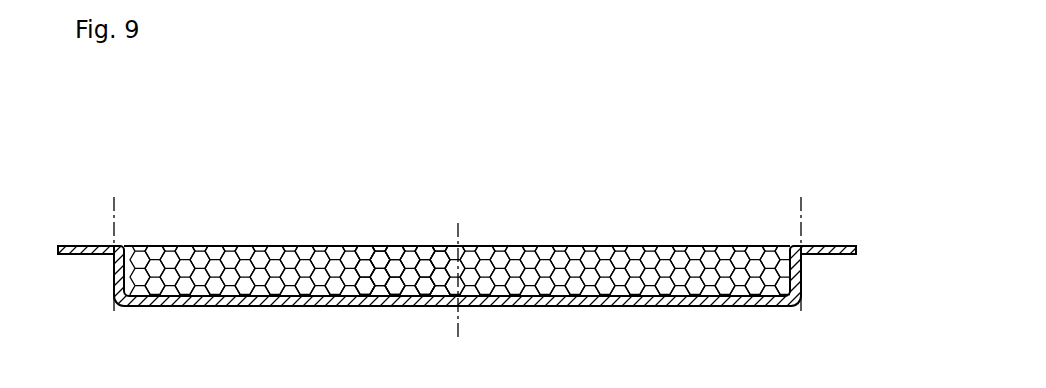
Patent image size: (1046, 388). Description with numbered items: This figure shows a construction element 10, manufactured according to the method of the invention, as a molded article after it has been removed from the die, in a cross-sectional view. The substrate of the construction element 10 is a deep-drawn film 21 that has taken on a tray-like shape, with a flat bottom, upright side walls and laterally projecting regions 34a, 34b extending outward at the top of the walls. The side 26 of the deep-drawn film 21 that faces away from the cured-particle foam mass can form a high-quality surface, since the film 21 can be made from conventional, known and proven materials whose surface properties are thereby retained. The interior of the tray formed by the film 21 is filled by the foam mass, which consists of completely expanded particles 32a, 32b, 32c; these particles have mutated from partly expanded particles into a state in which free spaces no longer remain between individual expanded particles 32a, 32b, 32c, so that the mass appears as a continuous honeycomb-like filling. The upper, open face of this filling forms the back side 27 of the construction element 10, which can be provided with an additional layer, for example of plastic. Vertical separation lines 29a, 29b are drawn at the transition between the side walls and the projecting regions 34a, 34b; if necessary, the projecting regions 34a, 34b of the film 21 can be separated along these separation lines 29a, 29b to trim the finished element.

The construction element 10 is at (599, 175).
The film 21 is at (277, 300).
The side of the deep-drawn film 26 is at (517, 308).
The back side 27 is at (372, 245).
The separation line 29a is at (110, 222).
The separation line 29b is at (805, 217).
The completely expanded particle 32a is at (373, 278).
The completely expanded particle 32b is at (393, 268).
The completely expanded particle 32c is at (430, 270).
The projecting region 34a is at (85, 240).
The projecting region 34b is at (845, 230).